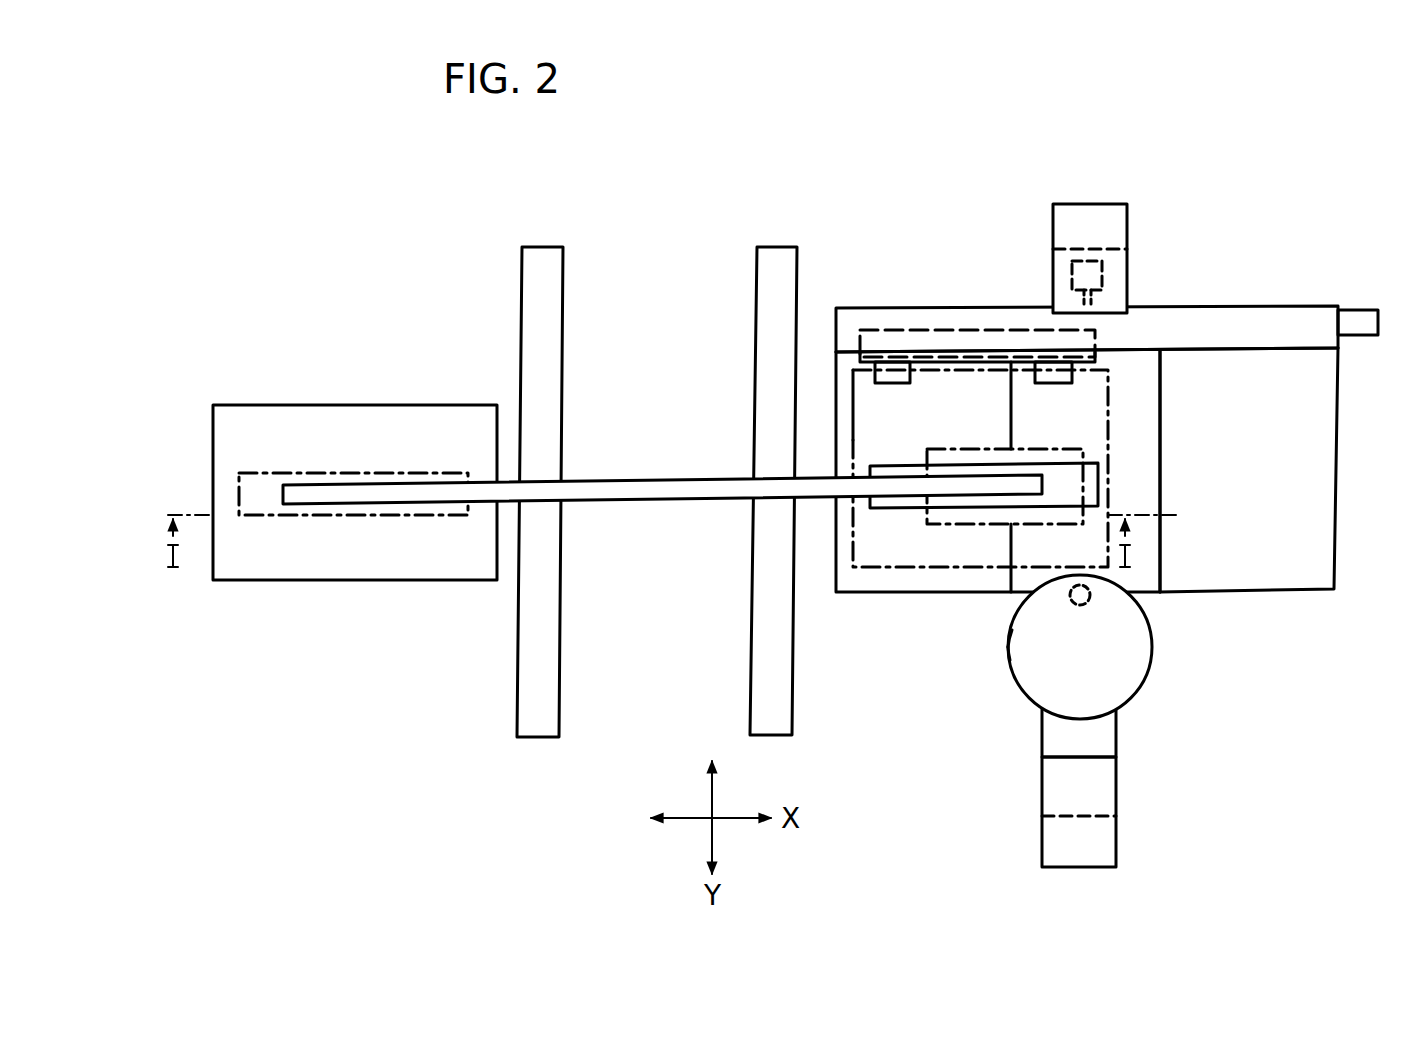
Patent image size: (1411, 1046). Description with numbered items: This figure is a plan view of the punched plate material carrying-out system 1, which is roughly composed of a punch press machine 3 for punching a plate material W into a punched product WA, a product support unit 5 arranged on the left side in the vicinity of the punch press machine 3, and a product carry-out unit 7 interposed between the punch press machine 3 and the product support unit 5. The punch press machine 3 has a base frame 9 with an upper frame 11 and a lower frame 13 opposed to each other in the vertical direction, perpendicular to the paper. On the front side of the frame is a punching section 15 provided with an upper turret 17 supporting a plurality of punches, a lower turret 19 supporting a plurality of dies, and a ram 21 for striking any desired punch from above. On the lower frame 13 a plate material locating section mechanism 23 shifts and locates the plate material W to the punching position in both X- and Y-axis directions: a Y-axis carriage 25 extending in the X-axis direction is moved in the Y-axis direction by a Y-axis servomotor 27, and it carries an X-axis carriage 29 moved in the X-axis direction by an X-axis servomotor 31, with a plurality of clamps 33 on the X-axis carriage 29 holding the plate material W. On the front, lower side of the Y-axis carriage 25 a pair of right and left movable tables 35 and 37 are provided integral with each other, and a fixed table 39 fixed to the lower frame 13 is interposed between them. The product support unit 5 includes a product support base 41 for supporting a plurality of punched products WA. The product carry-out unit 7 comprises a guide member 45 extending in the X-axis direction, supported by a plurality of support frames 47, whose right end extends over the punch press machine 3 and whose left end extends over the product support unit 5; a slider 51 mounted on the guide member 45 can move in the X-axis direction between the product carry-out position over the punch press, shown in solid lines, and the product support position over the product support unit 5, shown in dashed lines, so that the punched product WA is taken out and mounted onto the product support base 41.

The processing machine 1 is at (784, 410).
The punch press machine 3 is at (1093, 721).
The product support unit 5 is at (355, 528).
The product carry-out unit 7 is at (662, 512).
The base frame 9 is at (1120, 790).
The upper frame 11 is at (1090, 258).
The lower frame 13 is at (1042, 735).
The punching section 15 is at (1153, 675).
The upper turret 17 is at (1010, 660).
The lower turret 19 is at (1010, 638).
The ram 21 is at (1083, 607).
The plate material locating section mechanism 23 is at (1236, 304).
The Y-axis carriage 25 is at (1245, 350).
The Y-axis servomotor 27 is at (1102, 275).
The X-axis carriage 29 is at (925, 330).
The X-axis servomotor 31 is at (1355, 310).
The clamps 33 is at (891, 383).
The movable table 35 is at (858, 593).
The movable table 37 is at (1302, 590).
The fixed table 39 is at (1145, 592).
The product support base 41 is at (340, 405).
The guide member 45 is at (650, 483).
The support frames 47 is at (757, 283).
The slider 51 is at (272, 515).
The plate material W is at (1118, 418).
The punched product WA is at (1095, 458).